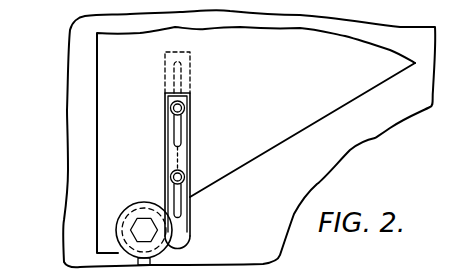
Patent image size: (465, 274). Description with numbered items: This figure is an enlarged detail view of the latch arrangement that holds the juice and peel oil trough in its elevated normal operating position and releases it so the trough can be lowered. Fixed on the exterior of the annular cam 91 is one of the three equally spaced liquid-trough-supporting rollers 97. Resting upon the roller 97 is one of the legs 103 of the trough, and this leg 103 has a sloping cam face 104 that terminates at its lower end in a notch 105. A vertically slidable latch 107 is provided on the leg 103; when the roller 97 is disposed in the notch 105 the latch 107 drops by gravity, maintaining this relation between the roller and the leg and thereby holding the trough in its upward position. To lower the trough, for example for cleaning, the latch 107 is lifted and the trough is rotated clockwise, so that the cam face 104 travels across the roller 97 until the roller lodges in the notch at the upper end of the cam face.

The annular cam 91 is at (75, 155).
The leg 103 is at (113, 98).
The sloping cam face 104 is at (286, 139).
The notch 105 is at (125, 202).
The vertically slidable latch 107 is at (185, 128).
The liquid-trough-supporting roller 97 is at (167, 252).